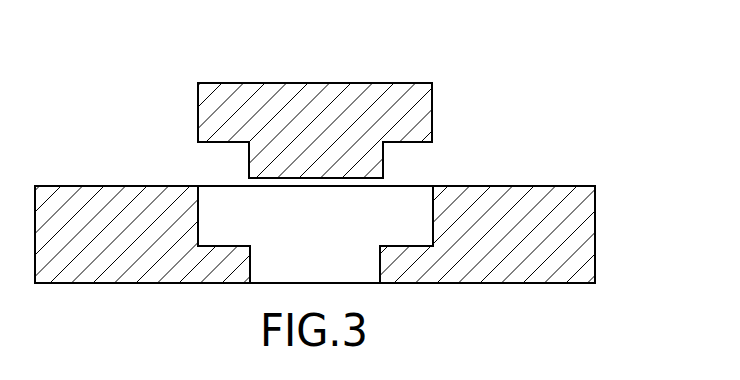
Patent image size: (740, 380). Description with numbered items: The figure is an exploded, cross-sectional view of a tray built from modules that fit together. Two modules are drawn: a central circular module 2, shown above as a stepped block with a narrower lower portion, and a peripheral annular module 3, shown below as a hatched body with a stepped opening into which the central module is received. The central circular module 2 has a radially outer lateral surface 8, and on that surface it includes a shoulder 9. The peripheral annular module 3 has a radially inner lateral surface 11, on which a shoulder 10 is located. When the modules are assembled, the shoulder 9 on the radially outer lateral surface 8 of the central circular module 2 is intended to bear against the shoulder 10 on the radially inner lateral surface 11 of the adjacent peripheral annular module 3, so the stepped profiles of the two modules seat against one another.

The central circular module 2 is at (371, 90).
The peripheral annular module 3 is at (563, 187).
The radially outer lateral surface 8 is at (443, 82).
The shoulder 9 is at (197, 106).
The shoulder 10 is at (251, 248).
The radially inner lateral surface 11 is at (368, 188).